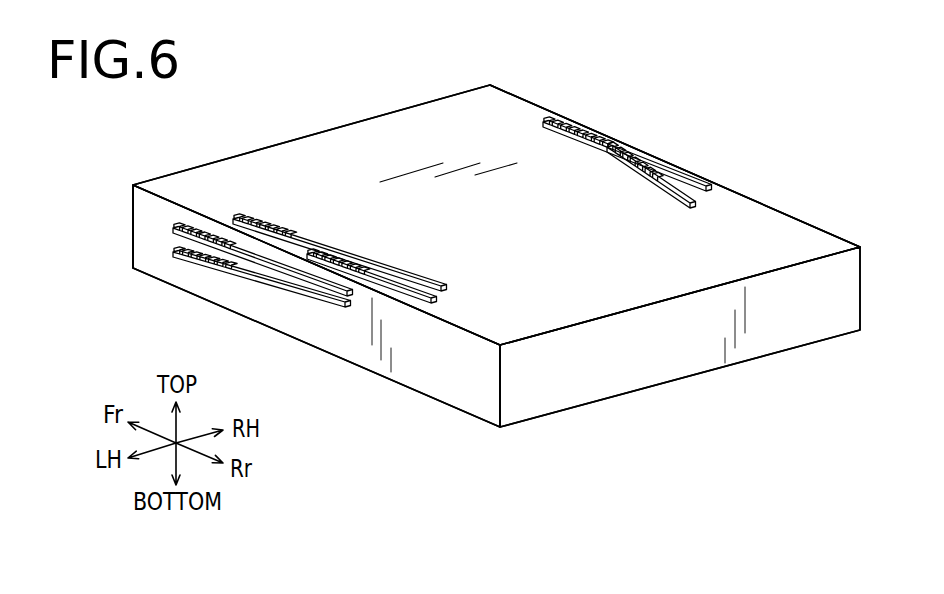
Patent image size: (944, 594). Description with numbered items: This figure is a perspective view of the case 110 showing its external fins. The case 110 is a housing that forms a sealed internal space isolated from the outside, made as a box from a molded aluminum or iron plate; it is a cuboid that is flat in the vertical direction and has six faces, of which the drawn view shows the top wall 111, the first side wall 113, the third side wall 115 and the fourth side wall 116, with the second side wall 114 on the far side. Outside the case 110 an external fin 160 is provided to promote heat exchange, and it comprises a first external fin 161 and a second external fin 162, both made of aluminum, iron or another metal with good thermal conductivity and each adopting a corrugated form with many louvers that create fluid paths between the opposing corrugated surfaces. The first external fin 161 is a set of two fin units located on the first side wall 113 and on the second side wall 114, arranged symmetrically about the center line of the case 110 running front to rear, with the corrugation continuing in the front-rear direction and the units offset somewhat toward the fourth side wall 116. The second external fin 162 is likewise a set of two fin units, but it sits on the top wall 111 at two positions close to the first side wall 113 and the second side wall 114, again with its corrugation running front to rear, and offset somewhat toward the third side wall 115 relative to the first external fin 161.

The case 110 is at (457, 94).
The top wall 111 is at (363, 140).
The first side wall 113 is at (325, 332).
The second side wall 114 is at (528, 102).
The third side wall 115 is at (673, 360).
The fourth side wall 116 is at (130, 207).
The external fin 160 is at (470, 235).
The first external fin 161 is at (246, 278).
The second external fin 162 is at (380, 278).